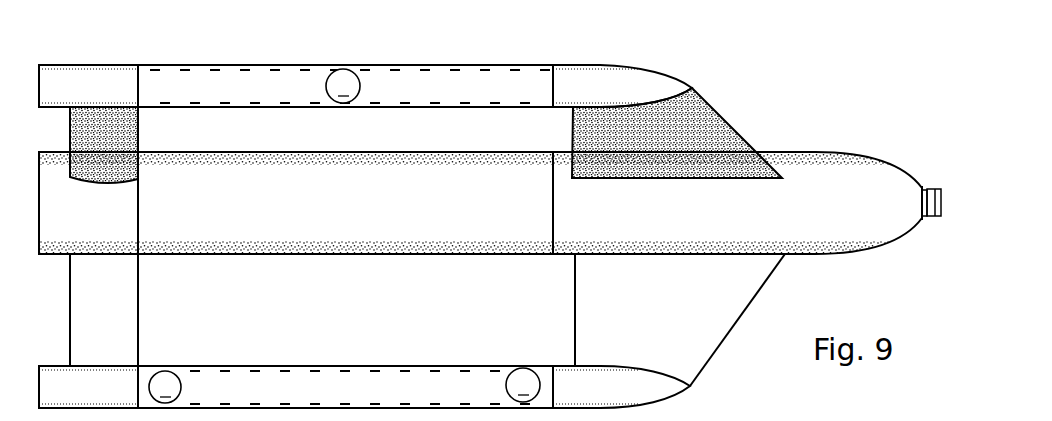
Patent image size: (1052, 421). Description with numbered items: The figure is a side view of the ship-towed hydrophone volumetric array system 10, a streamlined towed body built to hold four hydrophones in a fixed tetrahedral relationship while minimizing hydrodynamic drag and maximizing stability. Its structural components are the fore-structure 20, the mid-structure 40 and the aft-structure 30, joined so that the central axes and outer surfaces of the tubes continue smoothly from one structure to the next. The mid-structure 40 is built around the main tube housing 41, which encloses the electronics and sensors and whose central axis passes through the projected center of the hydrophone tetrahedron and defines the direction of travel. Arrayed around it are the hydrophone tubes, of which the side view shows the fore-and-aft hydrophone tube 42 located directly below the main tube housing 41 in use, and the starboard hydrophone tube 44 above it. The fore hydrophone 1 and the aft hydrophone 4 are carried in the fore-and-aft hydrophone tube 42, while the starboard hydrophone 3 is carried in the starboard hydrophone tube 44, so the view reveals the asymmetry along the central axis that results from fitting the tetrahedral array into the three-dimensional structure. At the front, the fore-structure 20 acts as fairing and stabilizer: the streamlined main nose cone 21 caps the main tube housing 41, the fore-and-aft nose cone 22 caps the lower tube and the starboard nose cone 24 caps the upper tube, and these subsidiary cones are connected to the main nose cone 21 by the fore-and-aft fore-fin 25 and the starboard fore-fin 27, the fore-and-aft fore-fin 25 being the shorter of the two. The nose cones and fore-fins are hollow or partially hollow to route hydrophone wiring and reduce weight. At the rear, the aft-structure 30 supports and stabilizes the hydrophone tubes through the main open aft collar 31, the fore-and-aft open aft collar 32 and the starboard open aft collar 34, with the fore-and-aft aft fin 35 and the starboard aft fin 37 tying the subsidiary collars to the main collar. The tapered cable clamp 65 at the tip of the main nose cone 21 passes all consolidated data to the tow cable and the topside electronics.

The ship-towed hydrophone volumetric array system 10 is at (888, 37).
The fore-structure 20 is at (765, 105).
The main nose cone 21 is at (862, 216).
The fore-and-aft nose cone 22 is at (619, 400).
The starboard nose cone 24 is at (620, 100).
The fore-and-aft fore-fin 25 is at (670, 324).
The starboard fore-fin 27 is at (672, 156).
The aft-structure 30 is at (82, 59).
The main open aft collar 31 is at (90, 216).
The fore-and-aft open aft collar 32 is at (82, 400).
The starboard open aft collar 34 is at (80, 100).
The fore-and-aft aft fin 35 is at (115, 331).
The starboard aft fin 37 is at (116, 153).
The mid-structure 40 is at (396, 60).
The main tube housing 41 is at (349, 213).
The fore-and-aft hydrophone tube 42 is at (262, 400).
The starboard hydrophone tube 44 is at (262, 100).
The fore hydrophone 1 is at (529, 395).
The starboard hydrophone 3 is at (349, 96).
The aft hydrophone 4 is at (171, 397).
The tapered cable clamp 65 is at (941, 218).